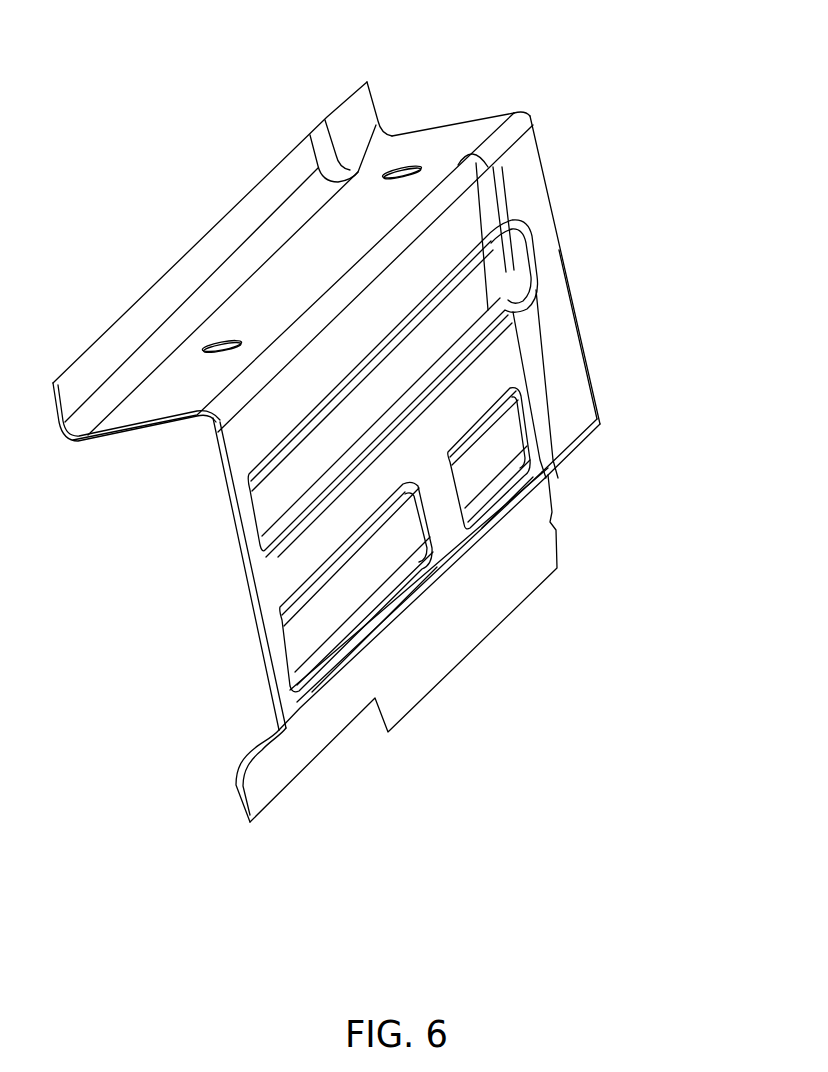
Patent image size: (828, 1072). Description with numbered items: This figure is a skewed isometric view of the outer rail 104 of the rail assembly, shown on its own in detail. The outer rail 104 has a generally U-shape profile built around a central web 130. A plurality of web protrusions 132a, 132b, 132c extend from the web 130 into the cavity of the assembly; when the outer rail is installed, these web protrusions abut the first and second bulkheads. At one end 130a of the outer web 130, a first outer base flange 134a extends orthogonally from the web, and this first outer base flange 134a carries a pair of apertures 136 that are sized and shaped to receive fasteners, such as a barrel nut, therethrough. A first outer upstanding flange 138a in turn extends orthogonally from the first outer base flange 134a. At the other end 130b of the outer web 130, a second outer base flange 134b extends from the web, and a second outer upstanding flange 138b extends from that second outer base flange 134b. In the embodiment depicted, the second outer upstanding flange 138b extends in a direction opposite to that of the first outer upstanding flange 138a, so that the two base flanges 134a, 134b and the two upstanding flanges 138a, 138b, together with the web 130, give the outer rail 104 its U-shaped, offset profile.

The outer rail 104 is at (318, 112).
The web 130 is at (563, 370).
The one end of the outer web 130a is at (532, 116).
The another end of the outer web 130b is at (602, 430).
The web protrusion 132a is at (533, 290).
The web protrusion 132b is at (425, 592).
The web protrusion 132c is at (508, 490).
The first outer base flange 134a is at (165, 425).
The second outer base flange 134b is at (263, 745).
The apertures 136 is at (420, 165).
The first outer upstanding flange 138a is at (243, 197).
The second outer upstanding flange 138b is at (437, 685).